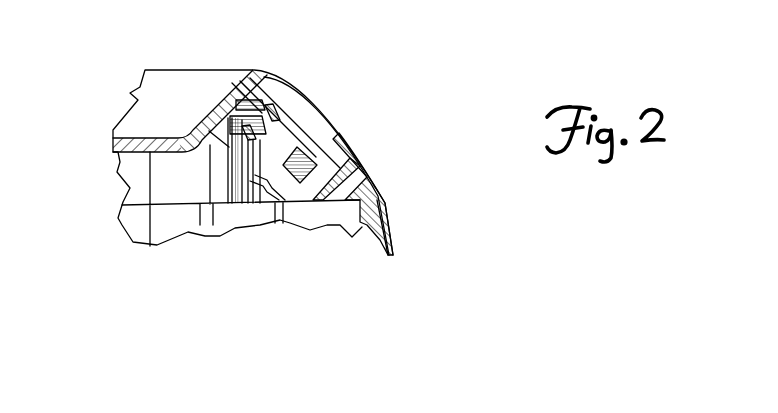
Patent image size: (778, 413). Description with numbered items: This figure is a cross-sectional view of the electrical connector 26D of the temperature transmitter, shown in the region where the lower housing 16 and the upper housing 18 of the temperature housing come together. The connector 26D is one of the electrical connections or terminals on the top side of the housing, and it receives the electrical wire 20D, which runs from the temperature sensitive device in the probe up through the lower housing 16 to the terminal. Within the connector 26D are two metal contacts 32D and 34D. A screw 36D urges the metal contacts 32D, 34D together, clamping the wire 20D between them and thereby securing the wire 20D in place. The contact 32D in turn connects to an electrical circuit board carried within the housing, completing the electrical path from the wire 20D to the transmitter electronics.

The lower housing 16 is at (378, 222).
The upper housing 18 is at (133, 90).
The electrical wire 20D is at (388, 196).
The electrical connector 26D is at (312, 85).
The metal contact 32D is at (298, 130).
The metal contact 34D is at (318, 143).
The screw 36D is at (228, 94).